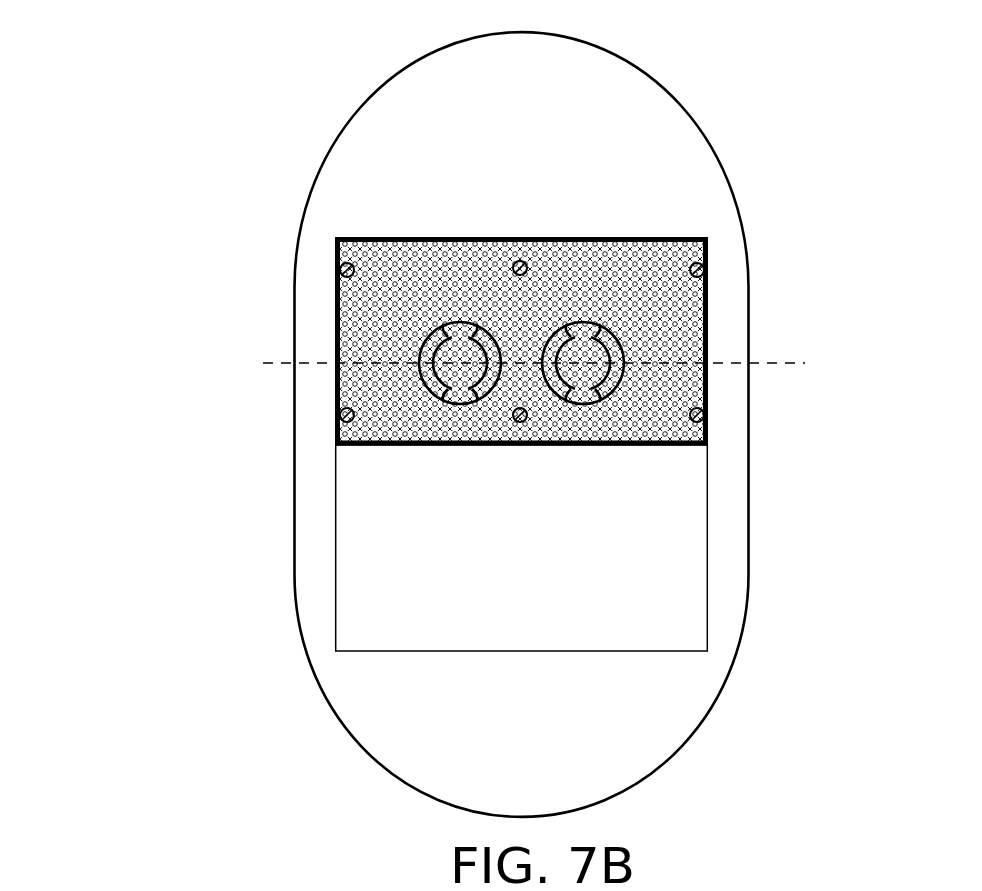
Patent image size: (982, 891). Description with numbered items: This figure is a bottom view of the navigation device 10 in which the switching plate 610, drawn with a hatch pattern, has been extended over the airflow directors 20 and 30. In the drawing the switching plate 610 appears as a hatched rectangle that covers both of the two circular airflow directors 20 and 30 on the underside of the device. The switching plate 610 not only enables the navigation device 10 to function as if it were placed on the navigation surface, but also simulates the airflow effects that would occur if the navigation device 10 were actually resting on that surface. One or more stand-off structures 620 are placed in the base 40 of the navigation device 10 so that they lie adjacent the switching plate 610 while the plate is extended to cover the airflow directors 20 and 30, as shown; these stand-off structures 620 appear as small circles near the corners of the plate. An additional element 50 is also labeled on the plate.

The navigation device 10 is at (157, 55).
The base 40 is at (333, 137).
The switching plate 610 is at (645, 260).
The airflow director 20 is at (427, 340).
The airflow director 30 is at (582, 322).
The fastener 50 is at (514, 263).
The stand-off structures 620 is at (335, 272).